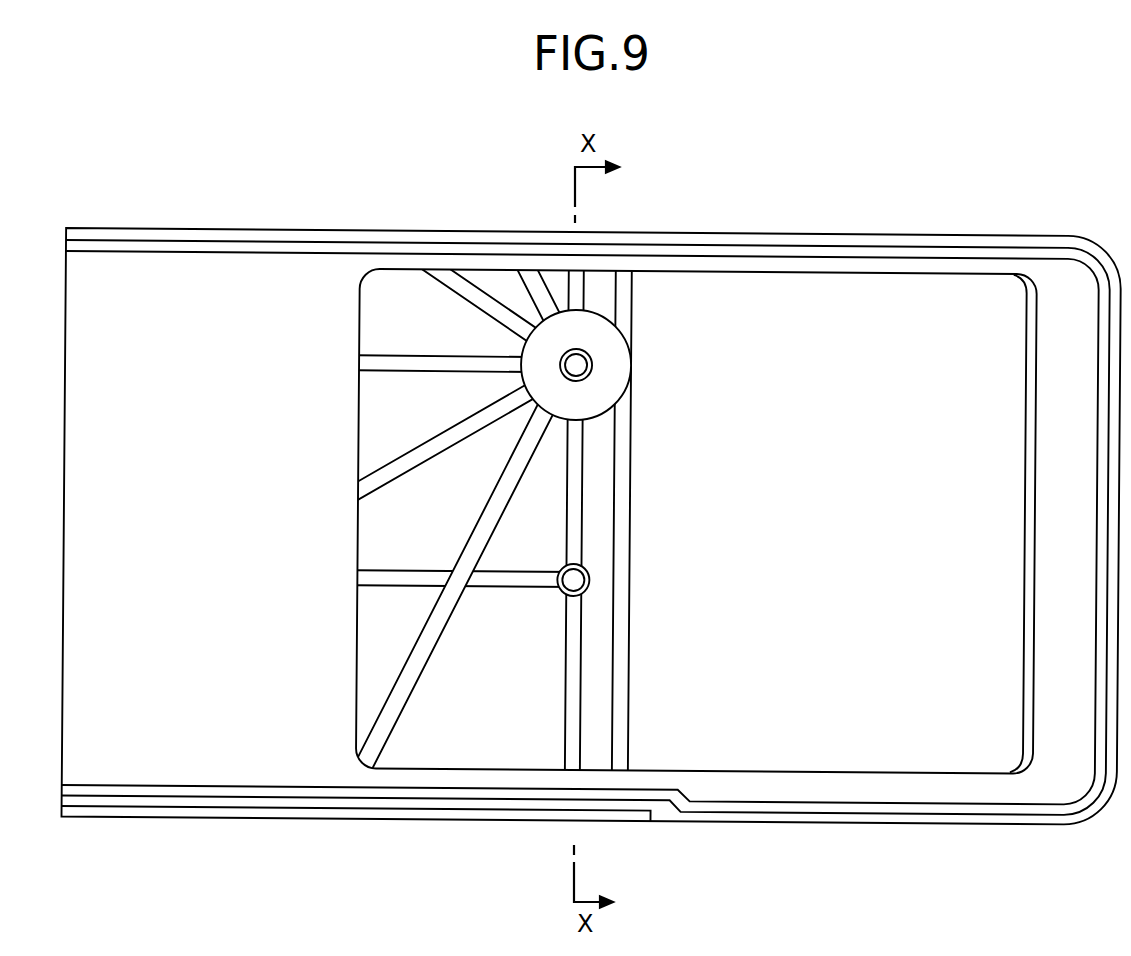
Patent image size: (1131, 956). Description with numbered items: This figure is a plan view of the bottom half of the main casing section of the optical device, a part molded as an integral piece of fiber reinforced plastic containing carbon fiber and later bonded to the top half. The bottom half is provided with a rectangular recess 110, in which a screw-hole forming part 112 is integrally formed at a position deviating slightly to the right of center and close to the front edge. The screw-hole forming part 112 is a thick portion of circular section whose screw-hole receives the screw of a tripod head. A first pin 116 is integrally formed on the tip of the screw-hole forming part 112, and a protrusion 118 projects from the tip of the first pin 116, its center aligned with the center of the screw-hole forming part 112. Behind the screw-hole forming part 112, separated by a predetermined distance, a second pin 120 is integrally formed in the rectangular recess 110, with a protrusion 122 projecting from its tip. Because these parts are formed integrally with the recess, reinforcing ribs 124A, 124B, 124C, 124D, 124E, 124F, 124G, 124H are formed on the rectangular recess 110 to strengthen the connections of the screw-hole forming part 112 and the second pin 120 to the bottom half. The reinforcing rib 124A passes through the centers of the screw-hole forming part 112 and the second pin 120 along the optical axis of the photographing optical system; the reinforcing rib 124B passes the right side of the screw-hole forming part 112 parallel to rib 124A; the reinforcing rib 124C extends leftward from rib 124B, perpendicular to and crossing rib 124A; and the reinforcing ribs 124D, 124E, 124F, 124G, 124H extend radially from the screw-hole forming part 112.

The rectangular recess 110 is at (746, 541).
The screw-hole forming part 112 is at (607, 312).
The first pin 116 is at (587, 346).
The protrusion 118 is at (582, 372).
The second pin 120 is at (586, 593).
The protrusion 122 is at (590, 578).
The reinforcing rib 124A is at (567, 677).
The reinforcing rib 124B is at (630, 670).
The reinforcing rib 124C is at (513, 585).
The reinforcing rib 124D is at (507, 493).
The reinforcing rib 124E is at (403, 468).
The reinforcing rib 124F is at (388, 364).
The reinforcing rib 124G is at (440, 283).
The reinforcing rib 124H is at (533, 294).